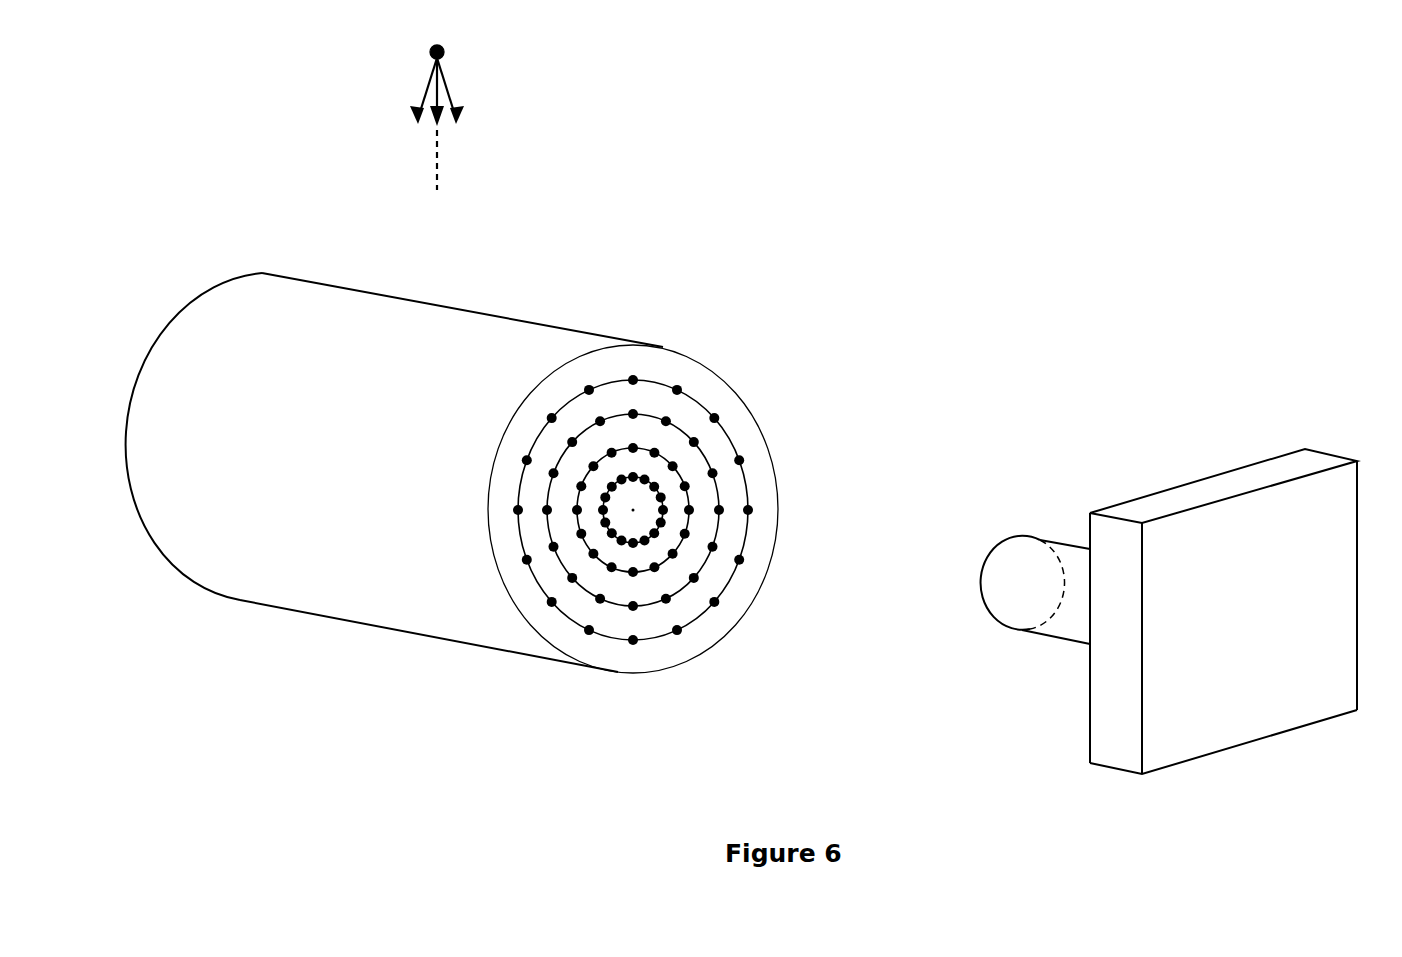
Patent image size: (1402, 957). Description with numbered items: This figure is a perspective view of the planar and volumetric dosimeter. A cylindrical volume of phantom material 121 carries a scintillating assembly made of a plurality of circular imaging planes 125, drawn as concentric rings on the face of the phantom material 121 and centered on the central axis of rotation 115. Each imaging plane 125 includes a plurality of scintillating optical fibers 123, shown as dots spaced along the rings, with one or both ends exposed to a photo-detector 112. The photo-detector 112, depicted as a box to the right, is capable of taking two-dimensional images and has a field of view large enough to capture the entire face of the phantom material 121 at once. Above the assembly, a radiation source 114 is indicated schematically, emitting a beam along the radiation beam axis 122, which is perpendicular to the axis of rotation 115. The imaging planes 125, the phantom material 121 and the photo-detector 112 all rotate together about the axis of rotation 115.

The photo-detector 112 is at (1216, 487).
The radiation source 114 is at (458, 52).
The axis of rotation 115 is at (633, 510).
The phantom material 121 is at (300, 322).
The radiation beam axis 122 is at (448, 170).
The scintillating optical fibers 123 is at (598, 597).
The circular imaging planes 125 is at (693, 577).